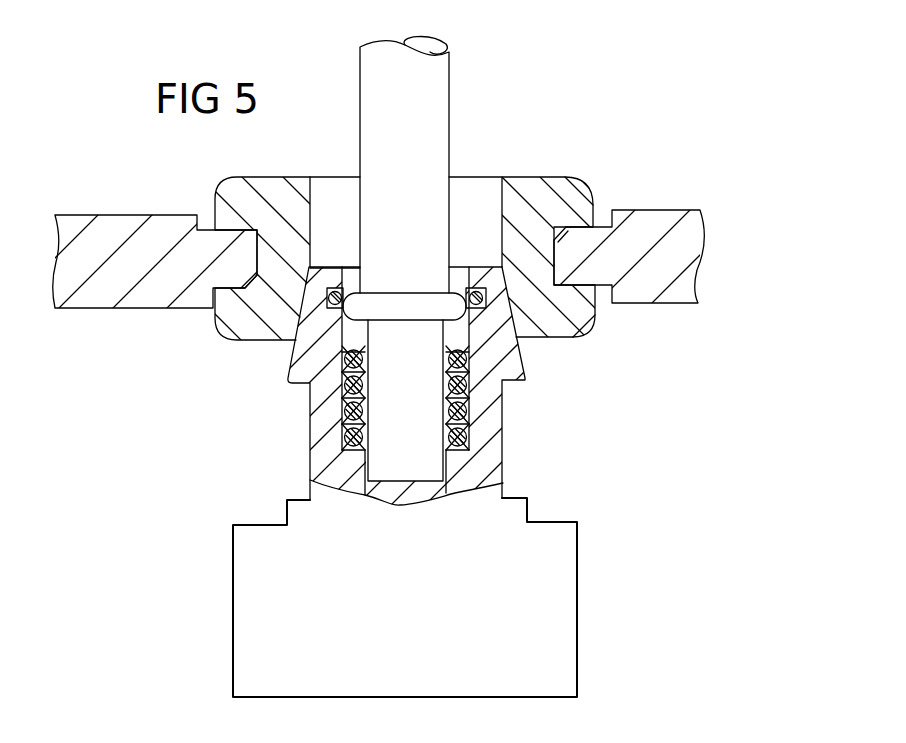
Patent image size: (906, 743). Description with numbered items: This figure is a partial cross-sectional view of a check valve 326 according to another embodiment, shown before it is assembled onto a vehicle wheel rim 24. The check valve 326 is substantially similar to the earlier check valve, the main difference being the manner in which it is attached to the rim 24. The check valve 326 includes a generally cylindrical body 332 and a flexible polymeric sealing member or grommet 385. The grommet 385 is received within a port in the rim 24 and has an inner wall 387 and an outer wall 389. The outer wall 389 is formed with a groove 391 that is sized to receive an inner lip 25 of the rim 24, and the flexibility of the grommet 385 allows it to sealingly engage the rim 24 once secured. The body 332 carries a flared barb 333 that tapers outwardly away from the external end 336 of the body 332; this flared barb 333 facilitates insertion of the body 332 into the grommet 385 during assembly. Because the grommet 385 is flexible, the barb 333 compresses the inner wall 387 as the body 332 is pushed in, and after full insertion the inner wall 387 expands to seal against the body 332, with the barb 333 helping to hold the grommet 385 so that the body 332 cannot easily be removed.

The rim 24 is at (663, 222).
The inner lip 25 is at (217, 243).
The check valve 326 is at (518, 78).
The body 332 is at (517, 425).
The flared barb 333 is at (507, 357).
The external end 336 is at (325, 266).
The grommet 385 is at (596, 337).
The inner wall 387 is at (500, 193).
The outer wall 389 is at (593, 203).
The groove 391 is at (555, 241).